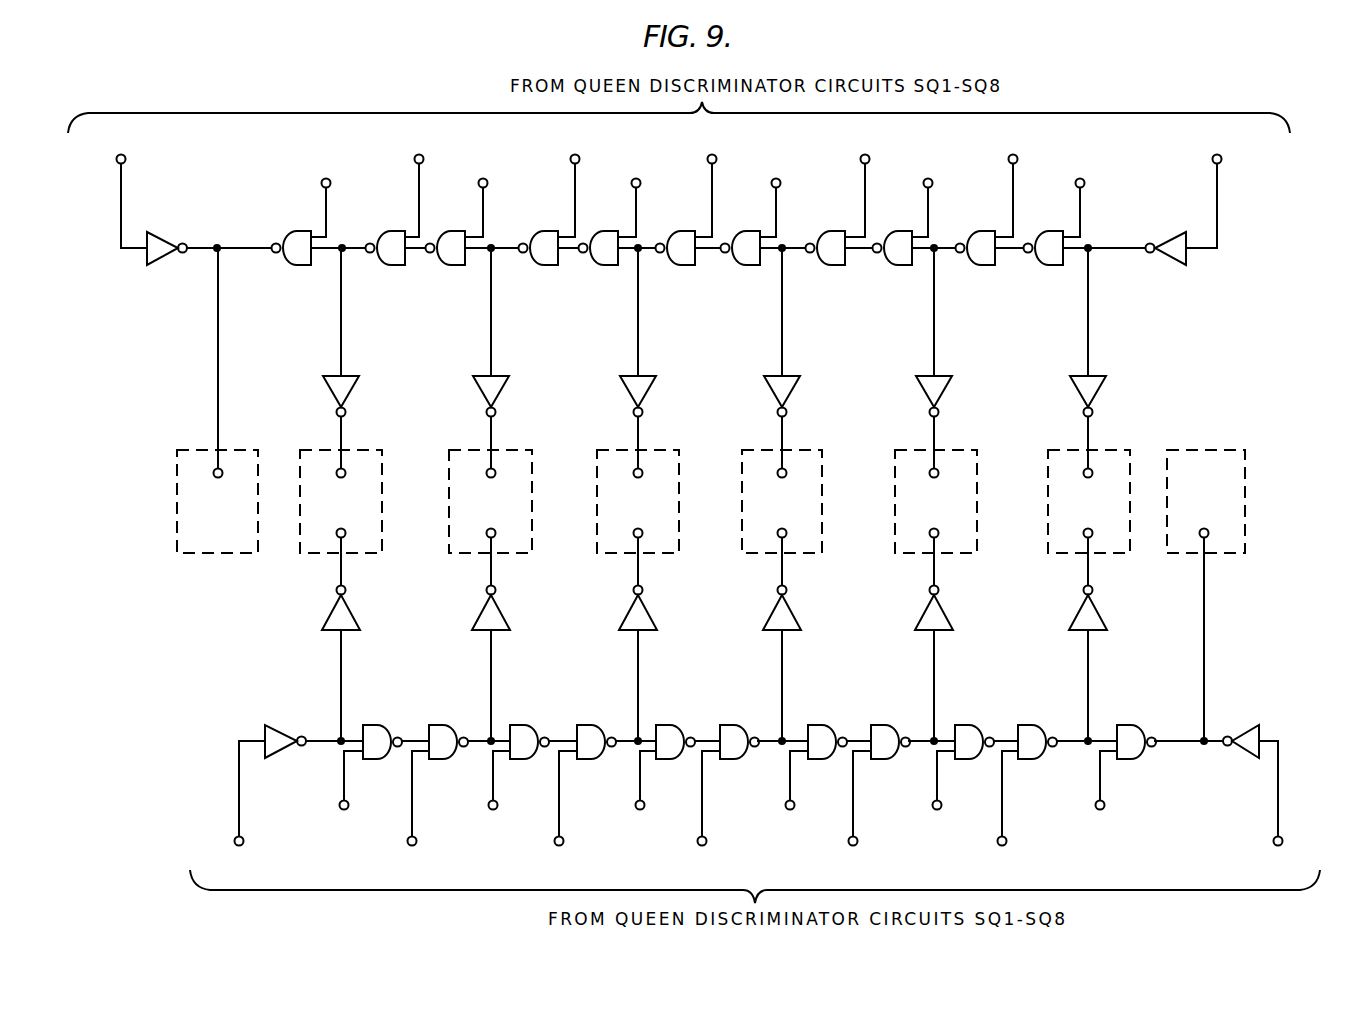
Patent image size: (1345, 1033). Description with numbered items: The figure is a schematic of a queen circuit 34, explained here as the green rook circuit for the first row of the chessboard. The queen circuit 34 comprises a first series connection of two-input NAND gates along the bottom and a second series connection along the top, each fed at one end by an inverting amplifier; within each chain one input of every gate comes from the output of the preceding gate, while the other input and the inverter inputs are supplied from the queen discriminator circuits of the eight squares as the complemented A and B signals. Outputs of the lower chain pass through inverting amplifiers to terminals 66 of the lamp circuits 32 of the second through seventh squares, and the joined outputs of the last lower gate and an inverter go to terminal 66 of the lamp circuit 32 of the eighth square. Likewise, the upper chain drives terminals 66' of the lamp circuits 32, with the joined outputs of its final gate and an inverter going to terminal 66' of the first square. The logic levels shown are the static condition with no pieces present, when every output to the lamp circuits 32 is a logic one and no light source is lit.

The lamp circuit 32 is at (727, 523).
The queen circuit 34 is at (1248, 380).
The terminal 66 is at (806, 546).
The terminal 66' is at (685, 449).